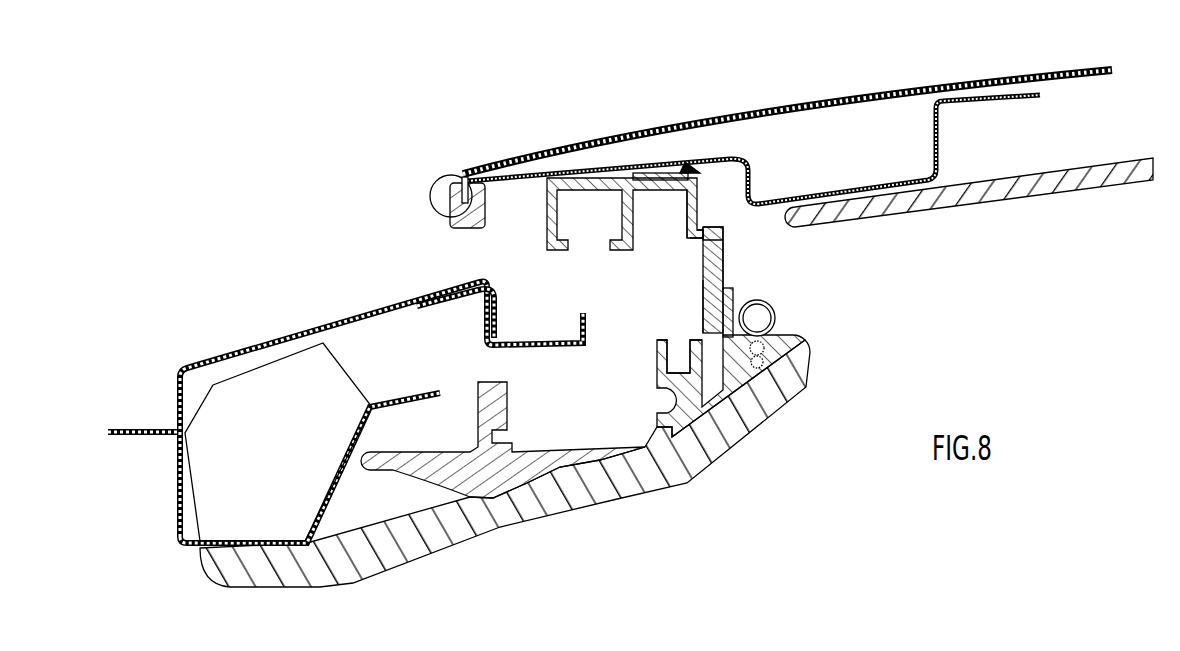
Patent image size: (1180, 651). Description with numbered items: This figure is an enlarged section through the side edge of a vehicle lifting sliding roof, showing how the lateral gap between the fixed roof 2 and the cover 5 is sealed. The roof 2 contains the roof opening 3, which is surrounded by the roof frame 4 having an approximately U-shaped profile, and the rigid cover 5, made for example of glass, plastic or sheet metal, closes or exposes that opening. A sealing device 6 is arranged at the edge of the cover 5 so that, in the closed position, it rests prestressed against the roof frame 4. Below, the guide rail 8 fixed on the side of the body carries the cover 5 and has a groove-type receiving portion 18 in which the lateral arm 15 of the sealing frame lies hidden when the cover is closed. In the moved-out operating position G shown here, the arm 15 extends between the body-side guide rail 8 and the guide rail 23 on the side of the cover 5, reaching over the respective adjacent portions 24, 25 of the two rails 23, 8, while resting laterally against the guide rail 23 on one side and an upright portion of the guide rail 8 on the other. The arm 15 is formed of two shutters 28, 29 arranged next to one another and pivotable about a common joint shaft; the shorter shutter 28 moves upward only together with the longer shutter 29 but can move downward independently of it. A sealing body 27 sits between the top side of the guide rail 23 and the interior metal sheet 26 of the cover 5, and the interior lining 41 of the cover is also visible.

The roof 2 is at (278, 323).
The roof opening 3 is at (565, 278).
The roof frame 4 is at (505, 325).
The cover 5 is at (818, 100).
The sealing device 6 is at (426, 180).
The guide rail 8 is at (534, 494).
The arm 15 is at (734, 268).
The receiving portion 18 is at (716, 392).
The guide rail 23 is at (684, 205).
The adjacent portion 24 is at (690, 231).
The adjacent portion 25 is at (735, 298).
The interior metal sheet 26 is at (647, 157).
The sealing body 27 is at (688, 170).
The shorter shutter 28 is at (714, 228).
The longer shutter 29 is at (694, 292).
The interior lining 41 is at (1056, 184).
The moved-out operating position G is at (736, 241).